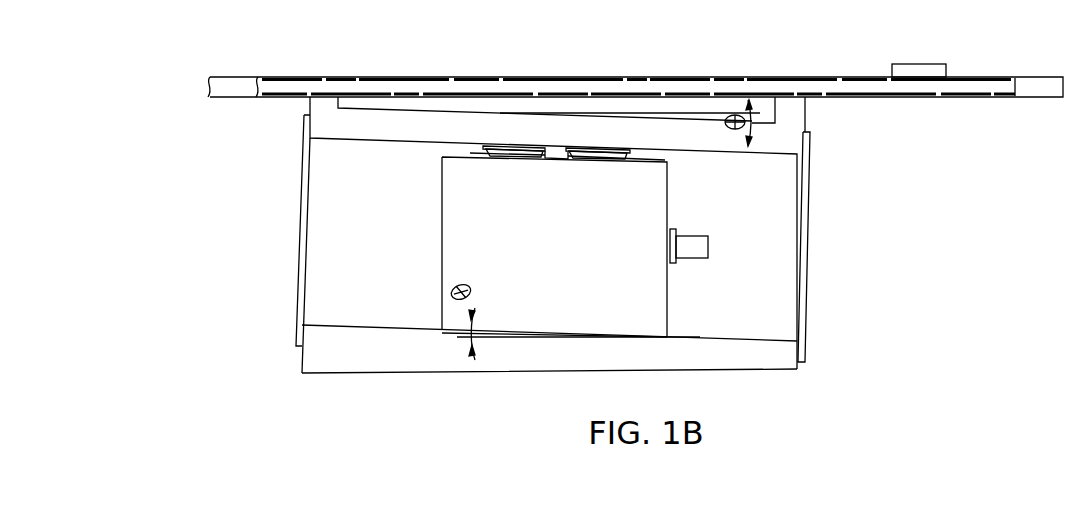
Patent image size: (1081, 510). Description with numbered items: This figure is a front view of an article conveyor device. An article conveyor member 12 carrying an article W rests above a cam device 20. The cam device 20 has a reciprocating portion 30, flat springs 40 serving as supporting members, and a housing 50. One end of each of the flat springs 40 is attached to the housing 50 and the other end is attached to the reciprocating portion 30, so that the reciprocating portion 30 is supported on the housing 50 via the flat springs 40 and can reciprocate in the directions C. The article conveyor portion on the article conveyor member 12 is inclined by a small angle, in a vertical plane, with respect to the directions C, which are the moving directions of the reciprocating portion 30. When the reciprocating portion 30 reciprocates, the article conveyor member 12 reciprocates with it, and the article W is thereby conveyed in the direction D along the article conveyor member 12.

The article conveyor member 12 is at (1028, 96).
The article W is at (925, 64).
The direction D is at (806, 48).
The reciprocating portion 30 is at (795, 140).
The cam device 20 is at (680, 222).
The flat springs 40 is at (300, 300).
The housing 50 is at (778, 370).
The directions C is at (657, 143).